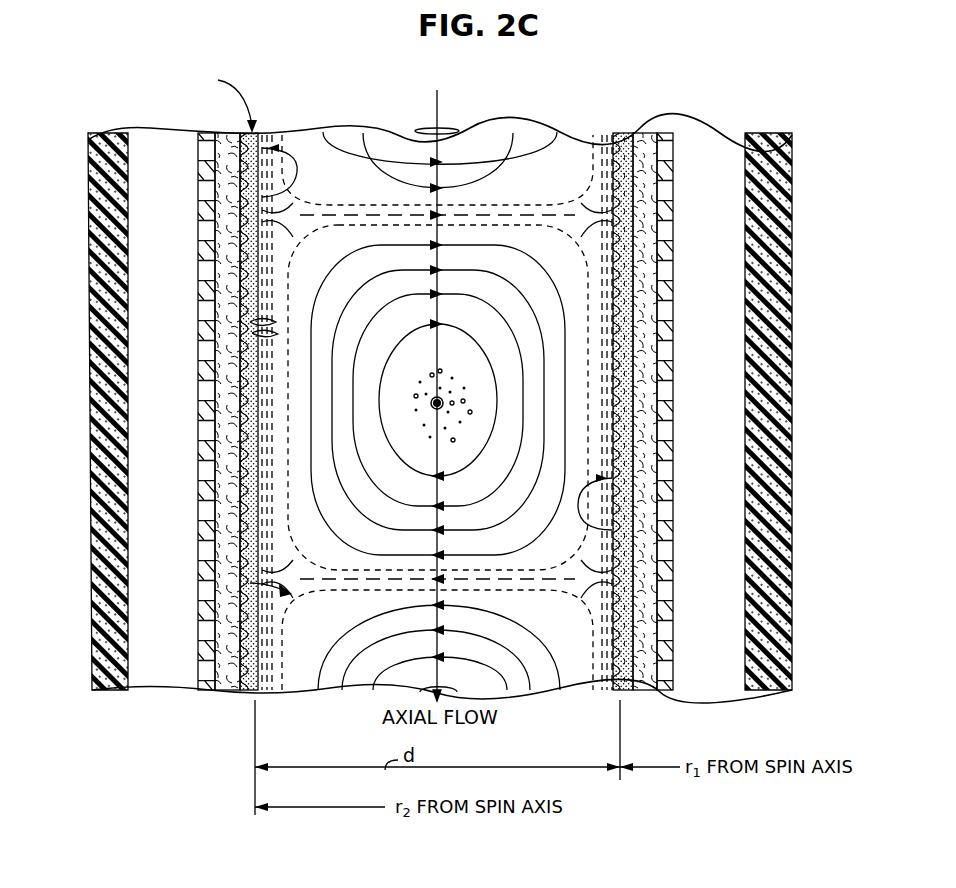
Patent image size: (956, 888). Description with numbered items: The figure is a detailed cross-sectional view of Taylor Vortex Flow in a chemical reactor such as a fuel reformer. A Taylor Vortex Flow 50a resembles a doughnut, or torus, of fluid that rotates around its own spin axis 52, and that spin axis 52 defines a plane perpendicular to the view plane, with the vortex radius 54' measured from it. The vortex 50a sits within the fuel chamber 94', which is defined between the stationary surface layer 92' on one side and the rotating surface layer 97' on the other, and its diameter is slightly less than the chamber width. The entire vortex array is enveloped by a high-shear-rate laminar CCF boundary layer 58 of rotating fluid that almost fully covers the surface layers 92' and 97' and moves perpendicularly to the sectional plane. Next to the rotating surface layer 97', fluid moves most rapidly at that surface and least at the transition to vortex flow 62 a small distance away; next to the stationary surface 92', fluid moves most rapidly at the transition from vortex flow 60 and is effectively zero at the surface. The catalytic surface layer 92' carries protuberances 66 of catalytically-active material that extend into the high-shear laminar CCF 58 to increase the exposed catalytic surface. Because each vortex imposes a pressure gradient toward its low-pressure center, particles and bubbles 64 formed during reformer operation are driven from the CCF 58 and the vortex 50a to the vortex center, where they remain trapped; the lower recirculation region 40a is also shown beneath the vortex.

The vortex radius 54' is at (402, 387).
The Taylor Vortex Flows 50a is at (510, 140).
The fuel chamber 94' is at (445, 133).
The high-shear-rate laminar CCF boundary layer 58 is at (268, 200).
The transition from vortex flow 60 is at (297, 218).
The protuberances 66 is at (265, 325).
The spin axis 52 is at (437, 403).
The stationary surface layer 92' is at (214, 613).
The lower recirculation zone 40a is at (401, 668).
The transition to vortex flow 62 is at (635, 215).
The particles and bubbles 64 is at (655, 362).
The rotating surface layer 97' is at (654, 424).
The circular Couette flow CCF is at (220, 101).